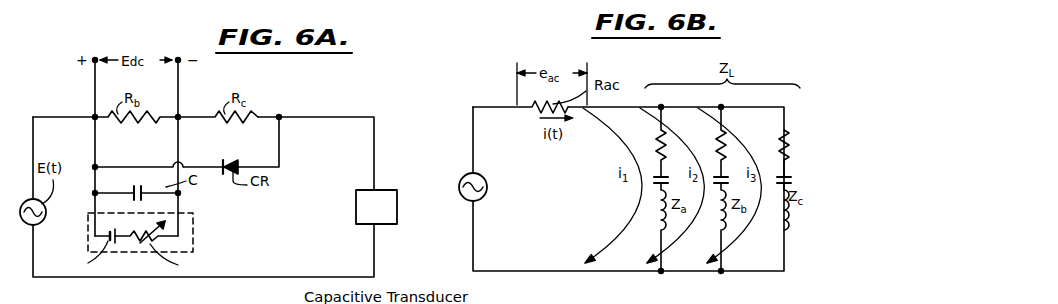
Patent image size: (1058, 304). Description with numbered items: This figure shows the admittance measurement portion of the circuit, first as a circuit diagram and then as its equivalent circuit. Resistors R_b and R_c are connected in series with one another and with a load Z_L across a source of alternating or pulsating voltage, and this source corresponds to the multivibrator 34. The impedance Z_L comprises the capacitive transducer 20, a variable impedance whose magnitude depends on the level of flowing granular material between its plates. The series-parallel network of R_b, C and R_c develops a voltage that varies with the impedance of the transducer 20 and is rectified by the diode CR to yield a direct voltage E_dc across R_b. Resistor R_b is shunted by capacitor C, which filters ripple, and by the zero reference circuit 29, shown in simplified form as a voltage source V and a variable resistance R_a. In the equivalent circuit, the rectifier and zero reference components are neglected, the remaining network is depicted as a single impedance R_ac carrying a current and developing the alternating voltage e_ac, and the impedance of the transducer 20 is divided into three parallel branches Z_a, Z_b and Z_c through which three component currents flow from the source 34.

In FIG. 6A, the multivibrator 34 is at (43, 219).
In FIG. 6B, the multivibrator 34 is at (483, 194).
In FIG. 6A, the capacitive transducer 20 is at (384, 194).
In FIG. 6A, the zero reference circuit 29 is at (193, 235).